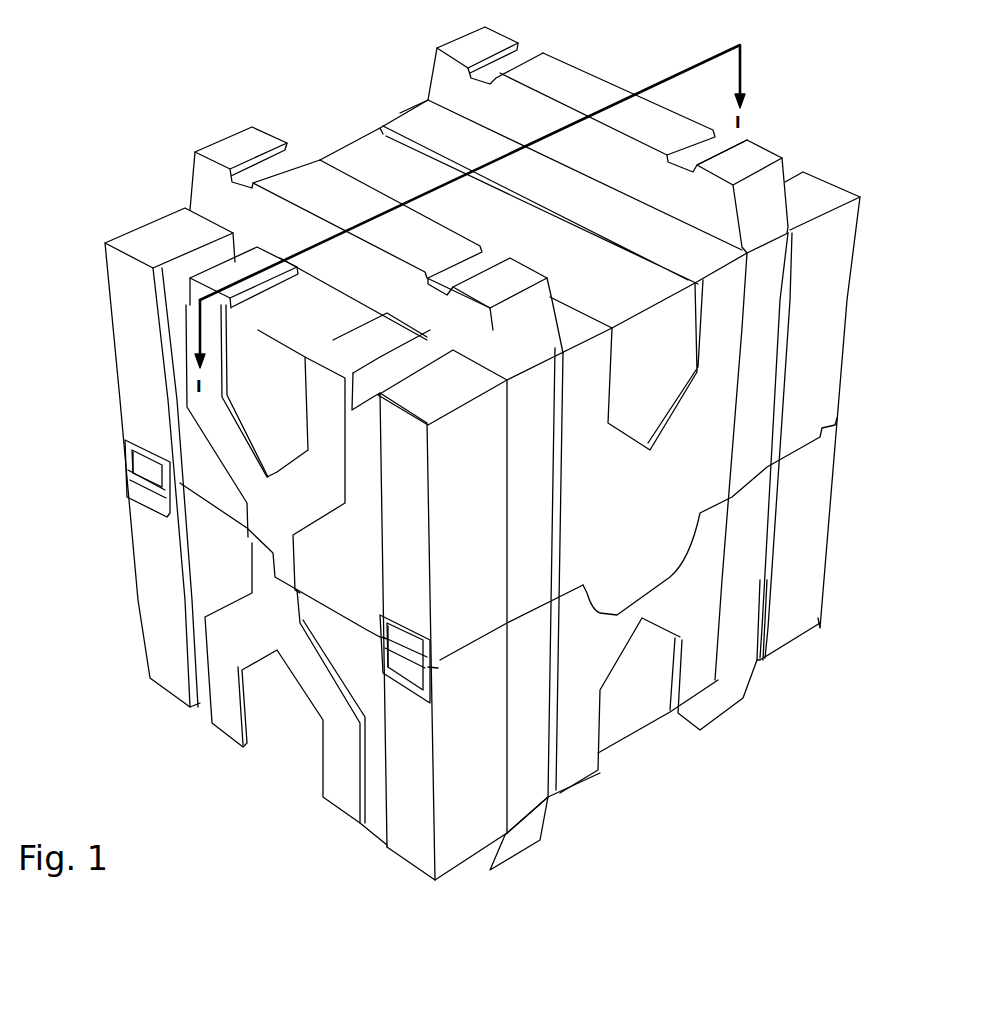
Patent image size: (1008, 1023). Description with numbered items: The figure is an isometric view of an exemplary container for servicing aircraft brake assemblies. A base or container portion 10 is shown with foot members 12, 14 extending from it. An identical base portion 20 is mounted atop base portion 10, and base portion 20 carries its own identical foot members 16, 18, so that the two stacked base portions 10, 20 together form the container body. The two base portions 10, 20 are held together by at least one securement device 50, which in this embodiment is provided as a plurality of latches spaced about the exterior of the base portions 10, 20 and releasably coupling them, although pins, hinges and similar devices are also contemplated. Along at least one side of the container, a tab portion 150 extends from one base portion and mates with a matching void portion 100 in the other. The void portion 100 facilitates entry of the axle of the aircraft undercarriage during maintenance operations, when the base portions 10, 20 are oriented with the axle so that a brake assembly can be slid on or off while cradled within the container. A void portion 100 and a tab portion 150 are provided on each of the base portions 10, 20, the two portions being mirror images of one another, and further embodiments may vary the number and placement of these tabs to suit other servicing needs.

The base portion 10 is at (837, 518).
The foot member 12 is at (519, 850).
The foot member 14 is at (728, 722).
The foot member 16 is at (220, 130).
The foot member 18 is at (415, 65).
The base portion 20 is at (853, 313).
The securement device 50 is at (135, 500).
The void portion 100 is at (612, 623).
The tab portion 150 is at (677, 575).